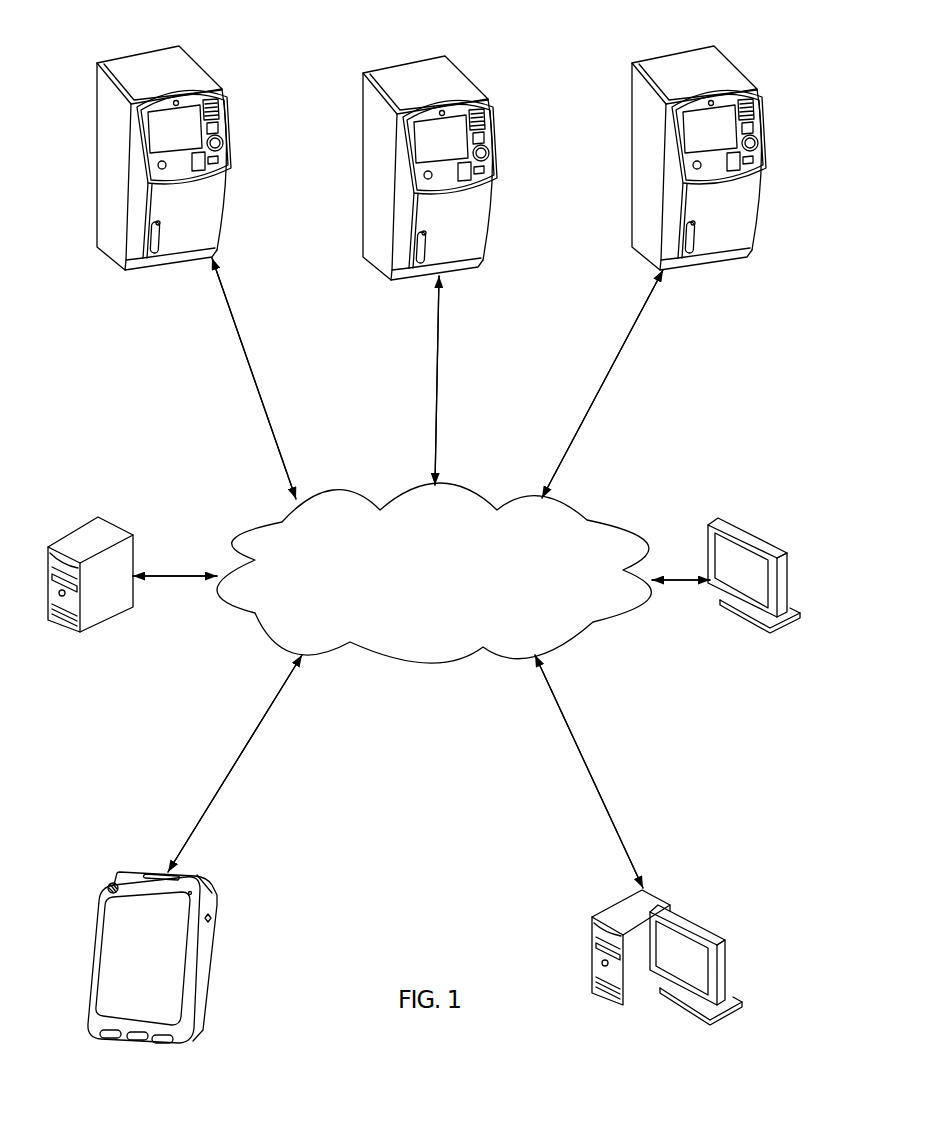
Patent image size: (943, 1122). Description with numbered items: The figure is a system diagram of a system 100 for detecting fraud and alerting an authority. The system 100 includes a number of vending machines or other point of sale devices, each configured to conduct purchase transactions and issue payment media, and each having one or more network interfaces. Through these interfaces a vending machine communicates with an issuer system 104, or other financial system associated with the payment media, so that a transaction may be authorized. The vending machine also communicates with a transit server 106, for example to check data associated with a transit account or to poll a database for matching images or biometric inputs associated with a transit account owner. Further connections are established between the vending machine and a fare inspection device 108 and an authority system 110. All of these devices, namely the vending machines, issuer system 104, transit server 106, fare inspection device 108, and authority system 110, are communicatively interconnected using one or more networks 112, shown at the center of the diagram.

The system 100 is at (421, 820).
The issuer system 104 is at (723, 517).
The transit server 106 is at (97, 515).
The fare inspection device 108 is at (215, 950).
The authority system 110 is at (673, 908).
The network 112 is at (453, 602).